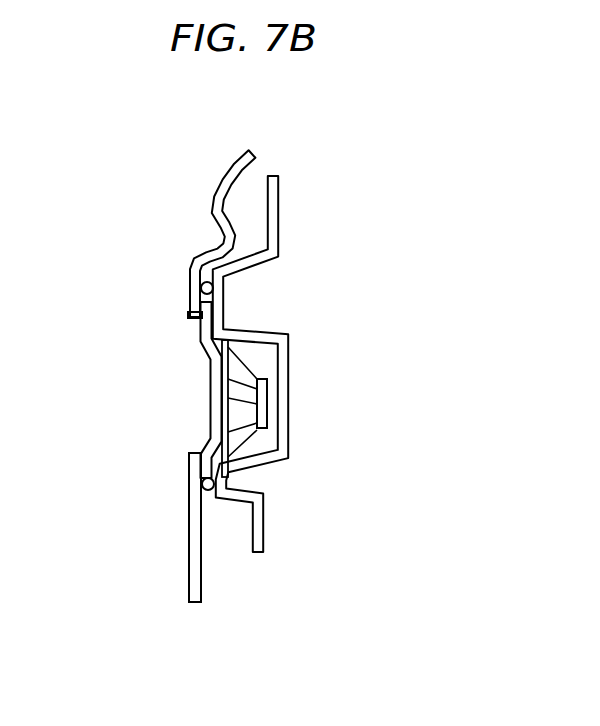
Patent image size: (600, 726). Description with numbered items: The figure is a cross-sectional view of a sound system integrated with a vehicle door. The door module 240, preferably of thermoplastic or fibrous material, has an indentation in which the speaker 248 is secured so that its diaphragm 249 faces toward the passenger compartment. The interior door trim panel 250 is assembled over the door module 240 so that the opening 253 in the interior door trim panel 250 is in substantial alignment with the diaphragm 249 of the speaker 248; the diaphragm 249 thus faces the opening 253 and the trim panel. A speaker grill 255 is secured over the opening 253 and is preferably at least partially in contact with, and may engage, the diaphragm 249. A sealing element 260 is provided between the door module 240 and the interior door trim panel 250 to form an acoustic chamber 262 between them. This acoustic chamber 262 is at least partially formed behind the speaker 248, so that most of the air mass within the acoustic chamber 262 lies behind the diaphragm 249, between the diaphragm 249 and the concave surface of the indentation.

The door module 240 is at (288, 512).
The speaker 248 is at (295, 401).
The diaphragm 249 is at (222, 410).
The interior door trim panel 250 is at (212, 208).
The opening 253 is at (180, 326).
The speaker grill 255 is at (207, 352).
The sealing element 260 is at (205, 484).
The acoustic chamber 262 is at (253, 358).